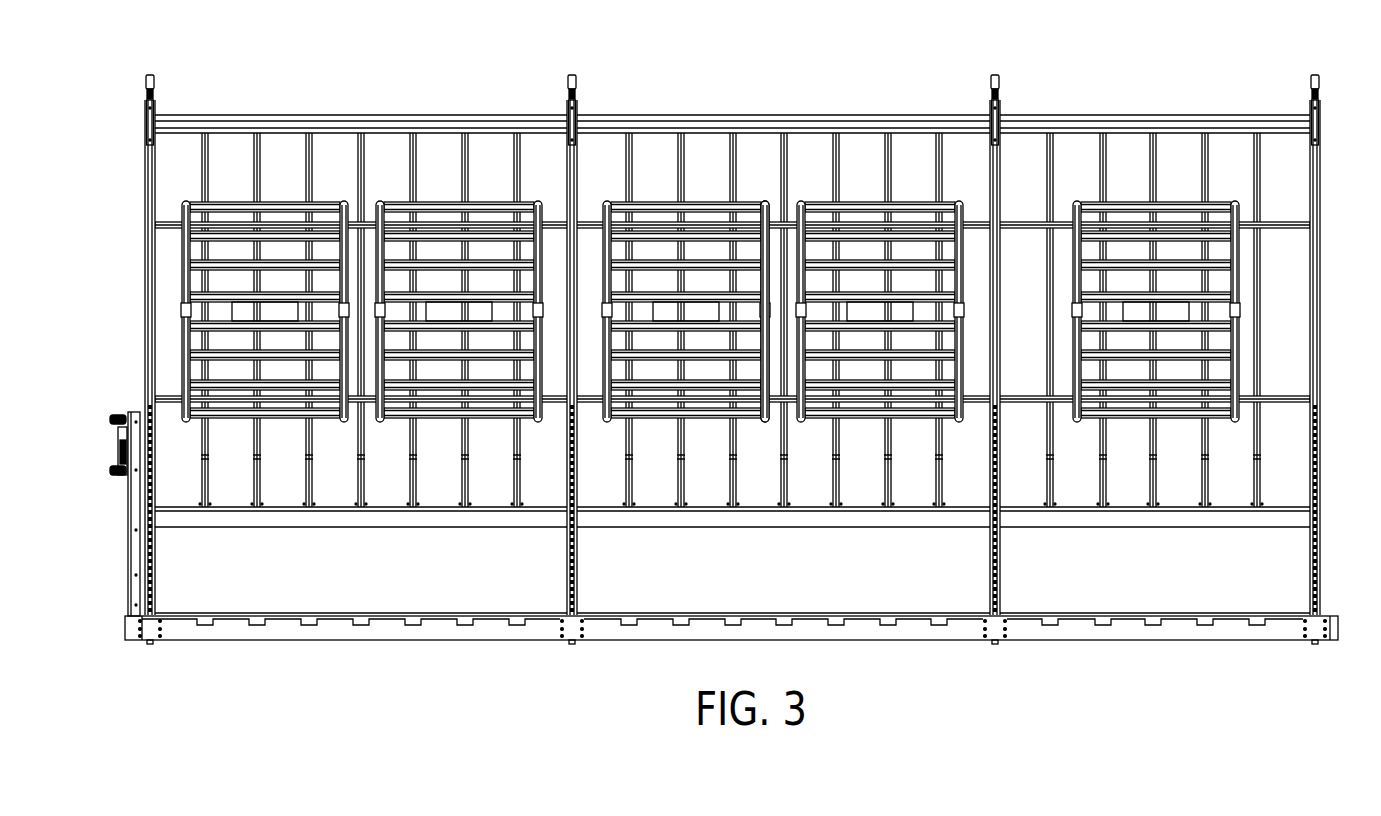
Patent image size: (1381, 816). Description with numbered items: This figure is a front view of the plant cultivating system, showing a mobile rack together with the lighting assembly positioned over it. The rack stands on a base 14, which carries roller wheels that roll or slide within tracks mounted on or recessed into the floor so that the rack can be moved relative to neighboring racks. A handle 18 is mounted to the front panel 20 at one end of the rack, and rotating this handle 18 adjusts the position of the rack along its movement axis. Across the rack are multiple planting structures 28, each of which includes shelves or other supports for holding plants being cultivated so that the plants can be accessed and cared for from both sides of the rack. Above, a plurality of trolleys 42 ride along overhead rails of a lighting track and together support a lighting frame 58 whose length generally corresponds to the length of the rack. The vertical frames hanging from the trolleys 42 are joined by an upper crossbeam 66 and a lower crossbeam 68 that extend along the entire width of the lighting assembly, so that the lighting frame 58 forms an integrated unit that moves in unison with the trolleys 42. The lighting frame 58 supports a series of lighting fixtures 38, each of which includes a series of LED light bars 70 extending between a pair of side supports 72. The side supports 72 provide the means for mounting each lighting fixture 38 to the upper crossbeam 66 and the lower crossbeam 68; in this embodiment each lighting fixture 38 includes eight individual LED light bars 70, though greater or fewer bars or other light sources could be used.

The base 14 is at (256, 630).
The handle 18 is at (120, 430).
The front panel 20 is at (130, 568).
The planting structures 28 is at (862, 492).
The lighting fixture 38 is at (650, 200).
The trolley 42 is at (1322, 130).
The lighting frame 58 is at (1018, 216).
The upper crossbeam 66 is at (1273, 222).
The lower crossbeam 68 is at (1276, 395).
The LED light bars 70 is at (703, 210).
The side supports 72 is at (768, 212).